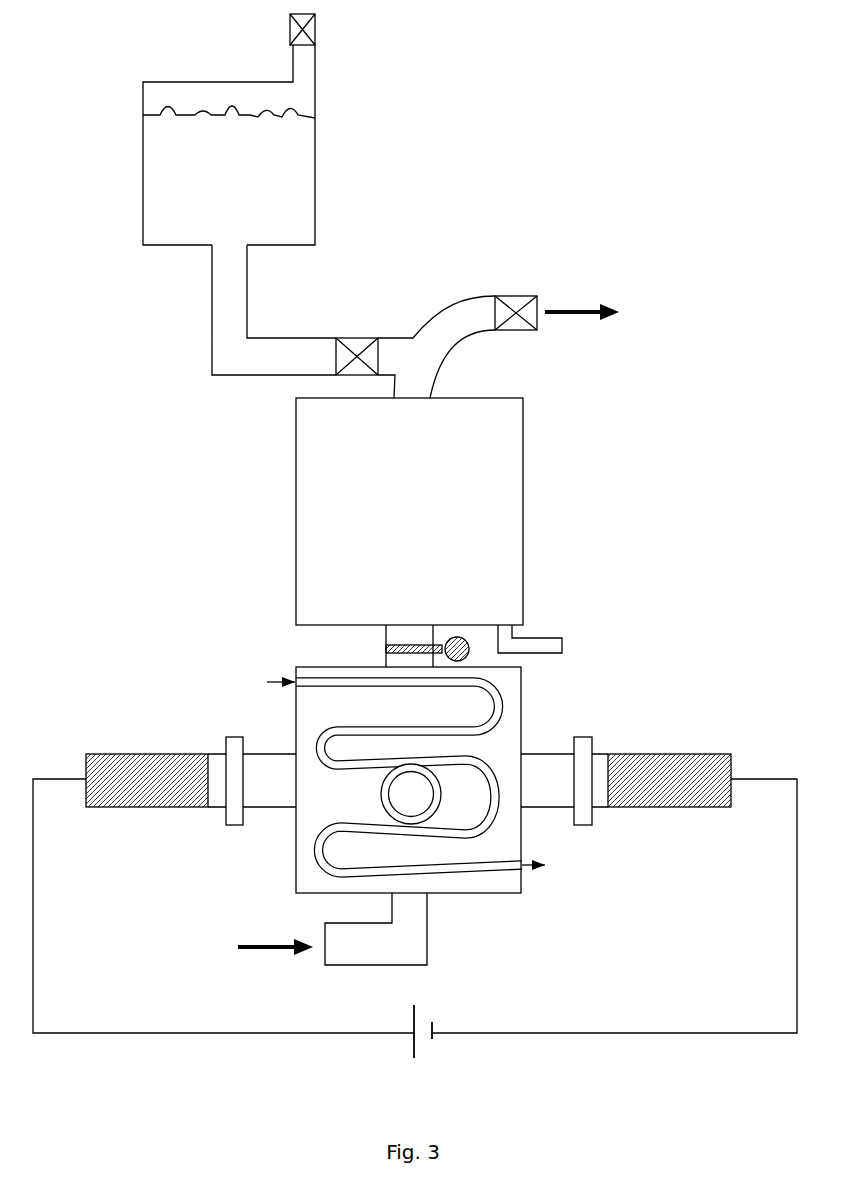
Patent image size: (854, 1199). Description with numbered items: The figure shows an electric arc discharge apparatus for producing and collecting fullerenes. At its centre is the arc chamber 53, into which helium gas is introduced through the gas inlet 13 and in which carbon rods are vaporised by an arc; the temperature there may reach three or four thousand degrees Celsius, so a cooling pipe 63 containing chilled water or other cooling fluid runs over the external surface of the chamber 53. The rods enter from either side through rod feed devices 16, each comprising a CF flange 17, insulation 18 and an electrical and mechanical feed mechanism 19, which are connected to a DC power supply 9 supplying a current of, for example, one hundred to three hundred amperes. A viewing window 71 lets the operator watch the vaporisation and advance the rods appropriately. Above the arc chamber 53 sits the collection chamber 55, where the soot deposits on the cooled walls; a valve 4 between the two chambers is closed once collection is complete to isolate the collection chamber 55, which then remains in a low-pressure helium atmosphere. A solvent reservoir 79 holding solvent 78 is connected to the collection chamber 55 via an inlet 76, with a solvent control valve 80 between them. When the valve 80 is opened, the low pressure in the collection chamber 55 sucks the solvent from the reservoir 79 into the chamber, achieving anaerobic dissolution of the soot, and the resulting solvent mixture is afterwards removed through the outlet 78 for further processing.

The valve 4 is at (437, 649).
The DC power supply 9 is at (415, 937).
The gas inlet 13 is at (427, 925).
The rod feed device 16 is at (52, 723).
The CF flange 17 is at (232, 732).
The insulation 18 is at (602, 812).
The electrical and mechanical feed mechanism 19 is at (158, 787).
The arc chamber 53 is at (313, 665).
The collection chamber 55 is at (488, 448).
The cooling pipe 63 is at (480, 873).
The viewing window 71 is at (438, 803).
The inlet 76 is at (416, 330).
The solvent 78 is at (243, 168).
The solvent reservoir 79 is at (315, 217).
The valve 80 is at (360, 338).